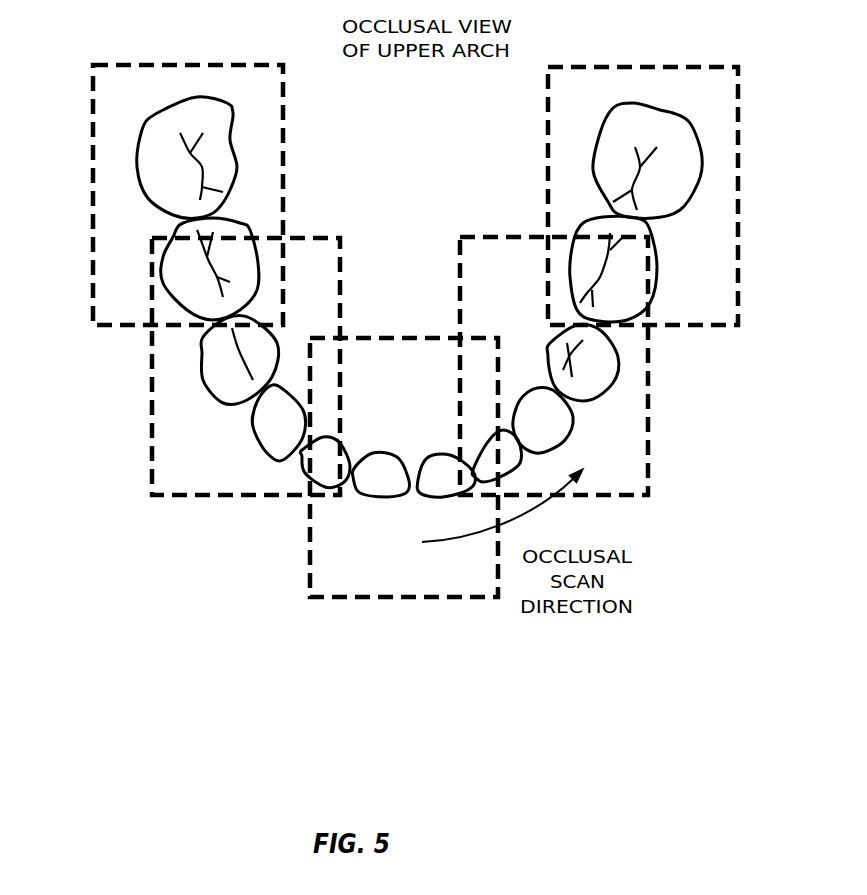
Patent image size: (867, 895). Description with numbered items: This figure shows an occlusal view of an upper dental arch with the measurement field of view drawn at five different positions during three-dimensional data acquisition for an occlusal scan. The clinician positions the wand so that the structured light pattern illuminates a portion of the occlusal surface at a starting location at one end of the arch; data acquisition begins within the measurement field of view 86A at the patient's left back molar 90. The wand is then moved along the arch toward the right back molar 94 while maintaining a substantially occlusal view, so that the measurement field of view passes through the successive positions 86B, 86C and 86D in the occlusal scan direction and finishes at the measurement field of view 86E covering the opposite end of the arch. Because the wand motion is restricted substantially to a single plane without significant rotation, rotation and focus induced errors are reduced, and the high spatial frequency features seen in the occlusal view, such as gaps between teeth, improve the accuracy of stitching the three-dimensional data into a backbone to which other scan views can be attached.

The left back molar 90 is at (141, 132).
The molar tooth (last tooth of upper arch) 94 is at (690, 125).
The measurement field of view 86A is at (93, 213).
The measurement field of view 86B is at (150, 415).
The measurement field of view 86C is at (308, 552).
The measurement field of view 86D is at (650, 430).
The measurement field of view 86E is at (740, 195).